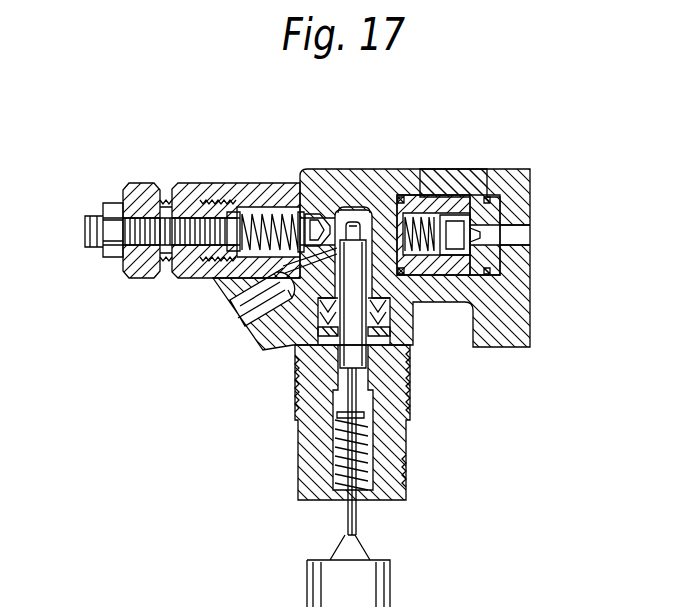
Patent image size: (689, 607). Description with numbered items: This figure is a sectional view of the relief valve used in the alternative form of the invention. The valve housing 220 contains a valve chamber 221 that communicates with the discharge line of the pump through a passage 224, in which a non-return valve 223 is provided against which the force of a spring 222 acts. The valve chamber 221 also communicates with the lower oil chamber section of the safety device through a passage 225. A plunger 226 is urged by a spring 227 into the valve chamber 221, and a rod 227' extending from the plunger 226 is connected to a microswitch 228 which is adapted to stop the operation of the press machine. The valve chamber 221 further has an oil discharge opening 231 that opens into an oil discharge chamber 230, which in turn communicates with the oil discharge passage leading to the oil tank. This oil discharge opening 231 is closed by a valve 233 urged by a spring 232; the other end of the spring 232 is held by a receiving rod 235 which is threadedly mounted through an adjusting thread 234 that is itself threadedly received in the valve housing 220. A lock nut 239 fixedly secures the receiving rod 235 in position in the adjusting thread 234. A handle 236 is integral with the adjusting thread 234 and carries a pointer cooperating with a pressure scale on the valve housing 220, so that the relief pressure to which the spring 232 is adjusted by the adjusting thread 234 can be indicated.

The valve housing 220 is at (373, 170).
The valve chamber 221 is at (378, 193).
The spring 222 is at (437, 195).
The non-return valve 223 is at (478, 195).
The passage 224 is at (520, 240).
The passage 225 is at (243, 323).
The plunger 226 is at (350, 342).
The spring 227 is at (316, 422).
The rod 227' is at (314, 453).
The microswitch 228 is at (370, 563).
The oil discharge chamber 230 is at (328, 220).
The oil discharge opening 231 is at (336, 196).
The spring 232 is at (265, 184).
The valve 233 is at (303, 184).
The adjusting thread 234 is at (200, 184).
The receiving rod 235 is at (125, 262).
The handle 236 is at (142, 183).
The lock nut 239 is at (112, 214).